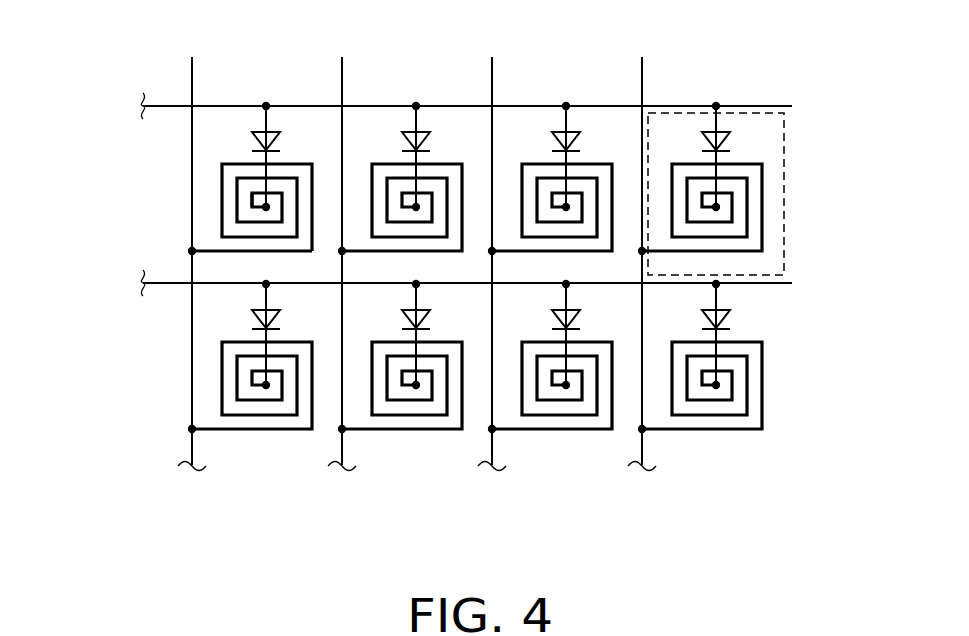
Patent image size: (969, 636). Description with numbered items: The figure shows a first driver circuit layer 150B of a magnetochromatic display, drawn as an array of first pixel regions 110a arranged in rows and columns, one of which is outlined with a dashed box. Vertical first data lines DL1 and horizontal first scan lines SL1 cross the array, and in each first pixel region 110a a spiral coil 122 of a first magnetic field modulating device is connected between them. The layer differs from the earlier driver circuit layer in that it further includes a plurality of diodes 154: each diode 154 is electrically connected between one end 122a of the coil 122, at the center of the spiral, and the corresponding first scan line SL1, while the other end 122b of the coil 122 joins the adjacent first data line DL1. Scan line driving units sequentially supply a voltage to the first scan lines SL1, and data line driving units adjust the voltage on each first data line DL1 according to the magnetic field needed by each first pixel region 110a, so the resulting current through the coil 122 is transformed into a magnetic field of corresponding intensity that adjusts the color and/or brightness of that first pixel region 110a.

The diode 154 is at (295, 130).
The coil 122 is at (222, 228).
The end of the coil 122a is at (256, 202).
The second end of coil 122b is at (211, 273).
The first data line DL1 is at (642, 87).
The first scan line SL1 is at (776, 106).
The first pixel region 110a is at (787, 250).
The first driver circuit layer 150B is at (877, 532).